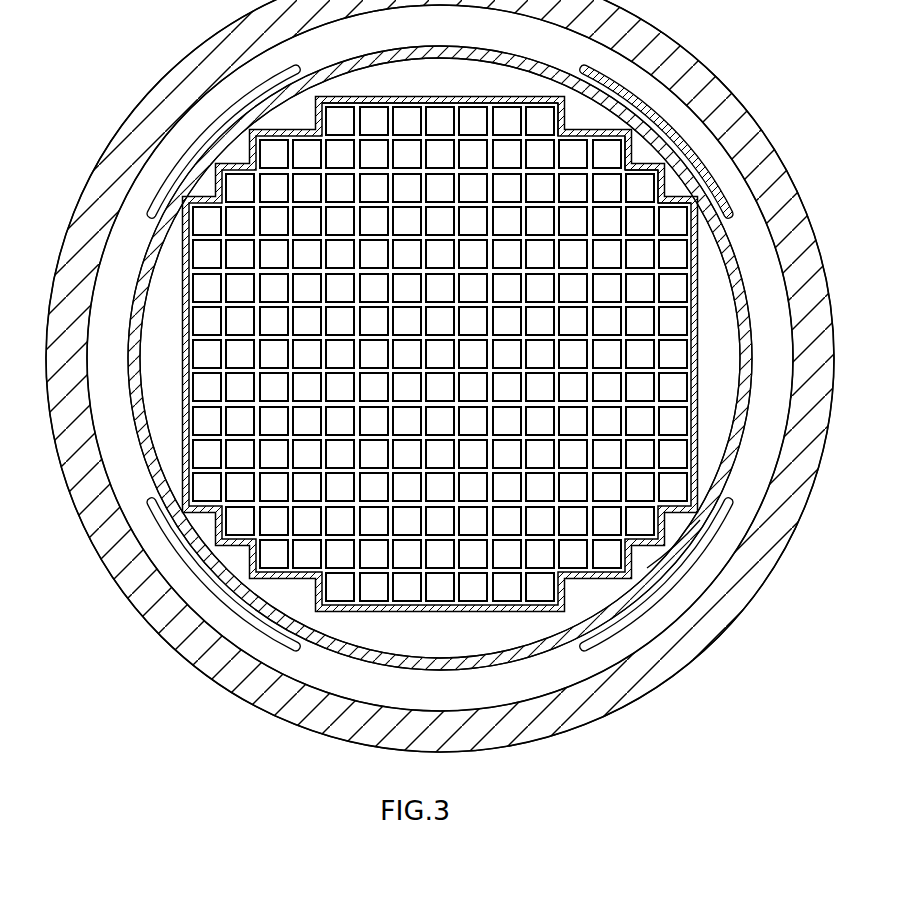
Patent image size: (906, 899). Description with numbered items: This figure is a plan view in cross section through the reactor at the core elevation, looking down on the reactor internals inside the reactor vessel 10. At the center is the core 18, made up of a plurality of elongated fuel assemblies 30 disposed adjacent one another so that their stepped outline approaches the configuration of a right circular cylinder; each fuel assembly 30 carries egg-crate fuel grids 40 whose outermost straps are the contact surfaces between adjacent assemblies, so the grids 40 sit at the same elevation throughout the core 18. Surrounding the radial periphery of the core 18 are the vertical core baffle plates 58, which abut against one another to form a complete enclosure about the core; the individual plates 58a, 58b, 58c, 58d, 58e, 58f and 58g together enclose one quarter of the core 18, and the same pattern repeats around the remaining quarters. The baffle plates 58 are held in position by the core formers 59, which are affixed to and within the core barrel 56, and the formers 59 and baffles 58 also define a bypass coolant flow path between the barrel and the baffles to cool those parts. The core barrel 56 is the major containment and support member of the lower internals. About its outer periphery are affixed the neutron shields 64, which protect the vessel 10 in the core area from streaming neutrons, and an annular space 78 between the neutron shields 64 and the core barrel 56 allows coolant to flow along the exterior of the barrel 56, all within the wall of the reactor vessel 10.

The reactor vessel 10 is at (768, 539).
The core 18 is at (449, 296).
The fuel assembly 30 is at (433, 113).
The fuel grid 40 is at (370, 138).
The core barrel 56 is at (398, 662).
The core baffle plates 58 is at (418, 612).
The baffle plate 58a is at (517, 97).
The baffle plate 58b is at (561, 107).
The baffle plate 58c is at (628, 120).
The baffle plate 58d is at (632, 147).
The baffle plate 58e is at (655, 158).
The baffle plate 58f is at (667, 198).
The baffle plate 58g is at (690, 217).
The core formers 59 is at (652, 558).
The neutron shields 64 is at (292, 641).
The annular space 78 is at (588, 642).